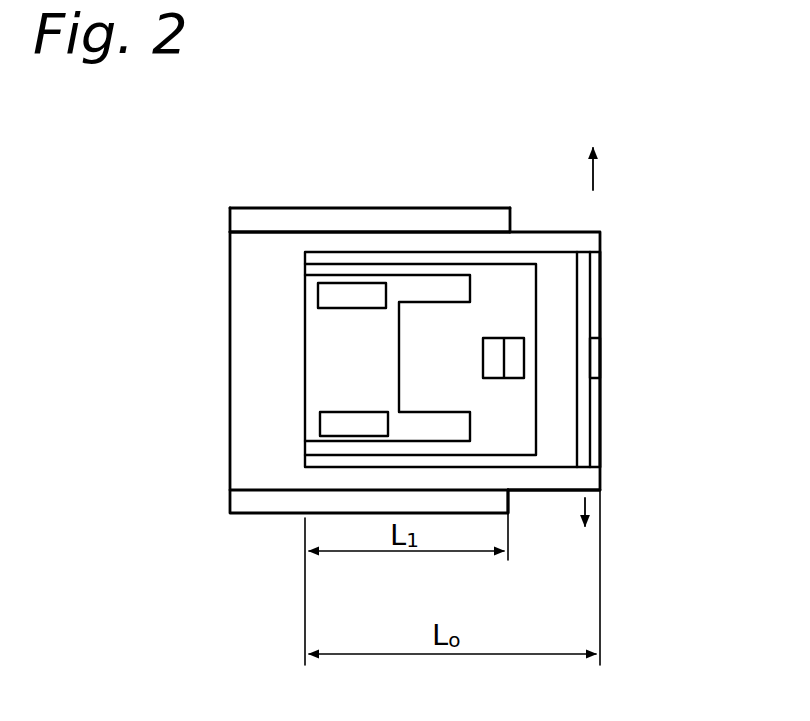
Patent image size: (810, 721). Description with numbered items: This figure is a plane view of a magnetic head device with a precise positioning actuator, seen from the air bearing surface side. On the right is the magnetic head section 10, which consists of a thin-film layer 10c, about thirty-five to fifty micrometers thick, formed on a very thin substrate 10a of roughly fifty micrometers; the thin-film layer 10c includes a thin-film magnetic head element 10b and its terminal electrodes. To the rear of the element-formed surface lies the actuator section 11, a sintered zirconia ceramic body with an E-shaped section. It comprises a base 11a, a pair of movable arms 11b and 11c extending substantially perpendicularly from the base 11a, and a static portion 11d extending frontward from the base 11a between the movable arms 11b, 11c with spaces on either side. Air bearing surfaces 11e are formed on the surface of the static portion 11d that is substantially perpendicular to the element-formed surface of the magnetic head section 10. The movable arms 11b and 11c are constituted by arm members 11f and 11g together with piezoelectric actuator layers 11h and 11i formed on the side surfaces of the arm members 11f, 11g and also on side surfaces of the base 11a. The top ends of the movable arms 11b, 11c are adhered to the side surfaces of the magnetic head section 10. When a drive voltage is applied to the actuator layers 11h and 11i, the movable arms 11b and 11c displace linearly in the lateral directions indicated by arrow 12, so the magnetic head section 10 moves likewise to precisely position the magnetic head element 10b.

The magnetic head section 10 is at (737, 260).
The substrate 10a is at (580, 282).
The thin-film magnetic head element 10b is at (598, 366).
The thin-film layer 10c is at (596, 326).
The actuator section 11 is at (462, 184).
The base 11a is at (253, 383).
The movable arm 11b is at (583, 590).
The movable arm 11c is at (408, 110).
The static portion 11d is at (511, 290).
The air bearing surfaces 11e is at (336, 298).
The arm member 11f is at (581, 483).
The arm member 11g is at (400, 245).
The actuator layer 11h is at (510, 503).
The actuator layer 11i is at (325, 218).
The arrow 12 is at (594, 172).